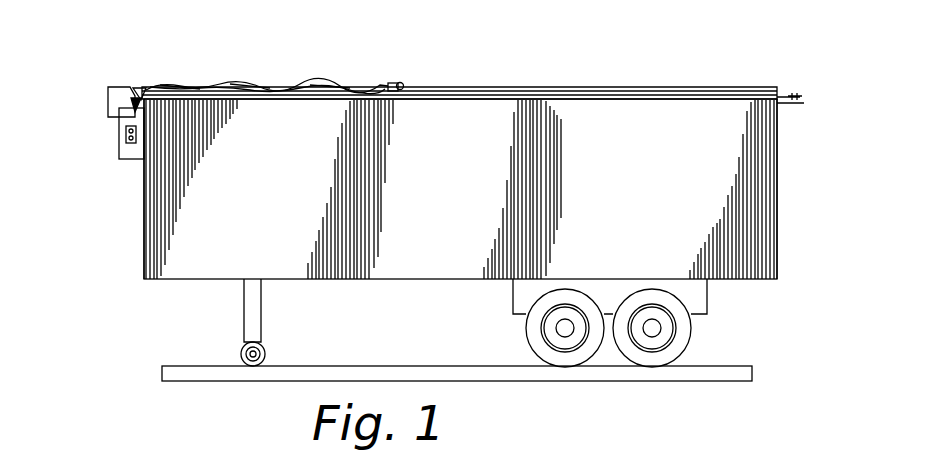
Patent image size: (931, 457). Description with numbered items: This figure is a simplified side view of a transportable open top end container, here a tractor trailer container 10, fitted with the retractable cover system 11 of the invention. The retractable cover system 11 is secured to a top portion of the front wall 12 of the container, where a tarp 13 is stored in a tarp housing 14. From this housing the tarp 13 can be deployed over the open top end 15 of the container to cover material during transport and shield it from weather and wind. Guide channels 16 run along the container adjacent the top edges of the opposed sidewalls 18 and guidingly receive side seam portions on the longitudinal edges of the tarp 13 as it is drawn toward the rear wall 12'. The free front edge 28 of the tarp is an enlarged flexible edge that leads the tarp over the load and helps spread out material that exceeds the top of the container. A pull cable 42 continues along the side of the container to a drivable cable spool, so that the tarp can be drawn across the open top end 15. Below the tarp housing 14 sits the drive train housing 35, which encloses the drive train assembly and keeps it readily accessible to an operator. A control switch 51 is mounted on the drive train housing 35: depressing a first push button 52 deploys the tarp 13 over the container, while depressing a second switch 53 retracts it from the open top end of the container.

The tractor trailer container 10 is at (160, 302).
The retractable cover system 11 is at (137, 74).
The front wall 12 is at (158, 189).
The rear wall 12' is at (812, 186).
The tarp 13 is at (243, 87).
The tarp housing 14 is at (102, 90).
The open top end 15 is at (636, 88).
The guide channel 16 is at (472, 98).
The sidewall 18 is at (703, 217).
The free front edge 28 is at (403, 84).
The drive train housing 35 is at (124, 141).
The pull cable 42 is at (593, 100).
The control switch 51 is at (143, 90).
The first push button 52 is at (123, 147).
The second switch 53 is at (133, 140).